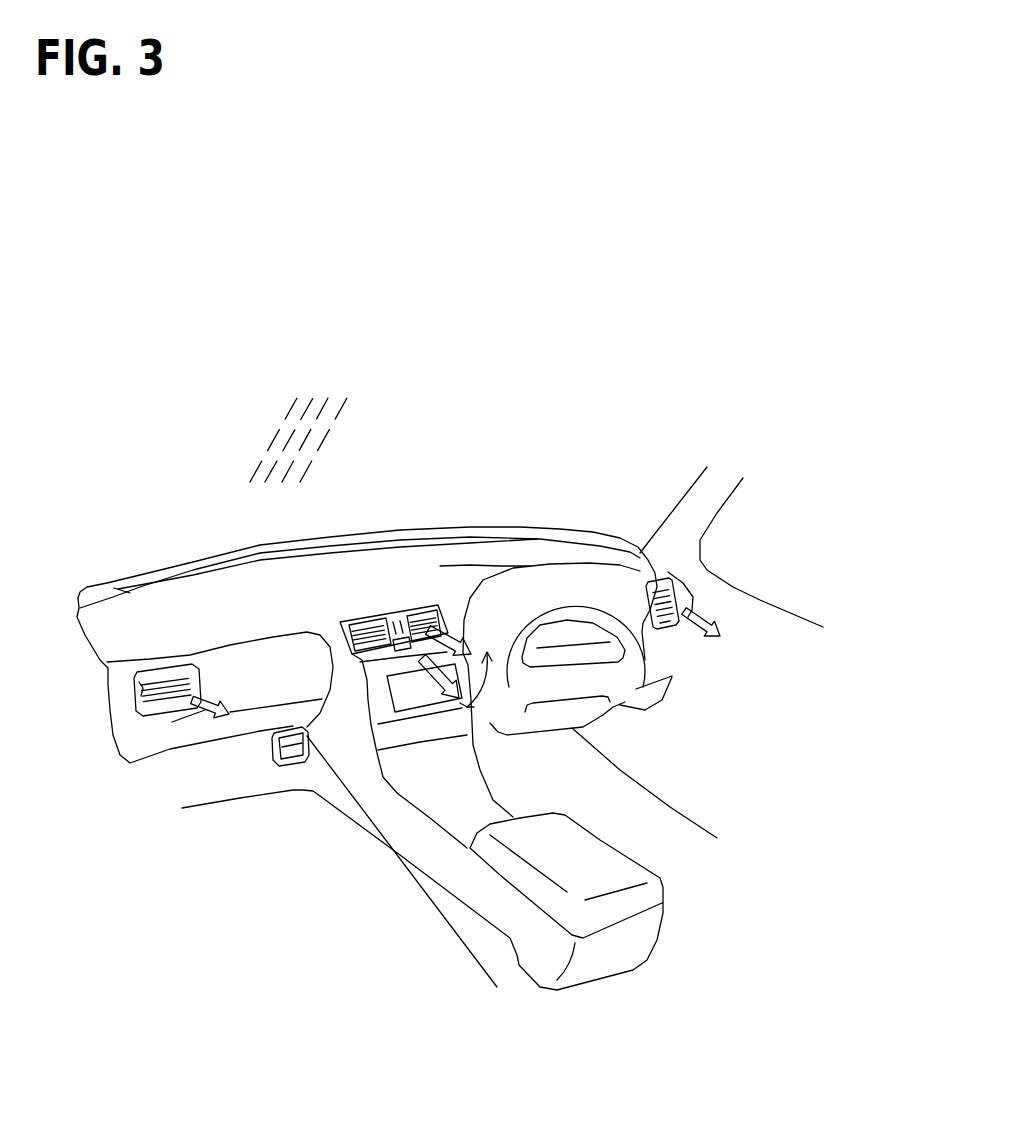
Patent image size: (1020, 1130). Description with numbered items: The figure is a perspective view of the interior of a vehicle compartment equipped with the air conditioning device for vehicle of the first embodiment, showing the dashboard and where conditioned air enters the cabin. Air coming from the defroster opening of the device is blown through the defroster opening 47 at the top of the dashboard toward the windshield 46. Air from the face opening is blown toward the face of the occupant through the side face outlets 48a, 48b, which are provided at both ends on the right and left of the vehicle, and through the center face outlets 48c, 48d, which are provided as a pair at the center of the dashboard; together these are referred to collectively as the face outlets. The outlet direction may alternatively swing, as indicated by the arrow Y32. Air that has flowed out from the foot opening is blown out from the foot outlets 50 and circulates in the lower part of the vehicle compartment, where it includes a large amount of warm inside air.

The windshield 46 is at (298, 411).
The defroster opening 47 is at (360, 524).
The side face outlet 48a is at (637, 536).
The side face outlet 48b is at (169, 621).
The center face outlet 48c is at (486, 560).
The center face outlet 48d is at (356, 566).
The foot outlet 50 is at (295, 795).
The arrow Y32 is at (423, 782).